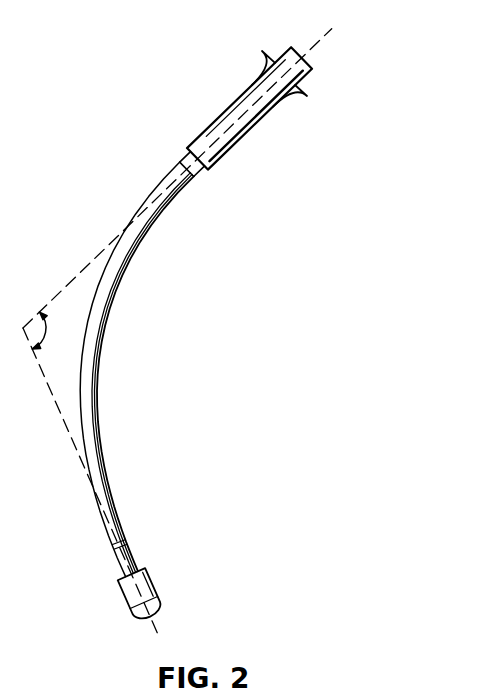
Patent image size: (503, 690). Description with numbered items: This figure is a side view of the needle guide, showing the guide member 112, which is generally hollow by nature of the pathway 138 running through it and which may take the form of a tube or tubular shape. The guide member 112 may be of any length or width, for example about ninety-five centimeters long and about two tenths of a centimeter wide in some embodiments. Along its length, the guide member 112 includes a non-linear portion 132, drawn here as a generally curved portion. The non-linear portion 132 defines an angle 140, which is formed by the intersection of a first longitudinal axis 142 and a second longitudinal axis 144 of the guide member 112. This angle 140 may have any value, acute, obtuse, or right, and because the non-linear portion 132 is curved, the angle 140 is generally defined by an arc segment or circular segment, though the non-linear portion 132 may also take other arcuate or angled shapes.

The guide member 112 is at (178, 172).
The non-linear portion 132 is at (123, 412).
The pathway 138 is at (347, 40).
The angle 140 is at (45, 334).
The first longitudinal axis 142 is at (178, 227).
The second longitudinal axis 144 is at (98, 565).